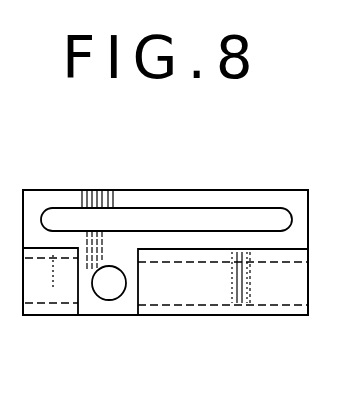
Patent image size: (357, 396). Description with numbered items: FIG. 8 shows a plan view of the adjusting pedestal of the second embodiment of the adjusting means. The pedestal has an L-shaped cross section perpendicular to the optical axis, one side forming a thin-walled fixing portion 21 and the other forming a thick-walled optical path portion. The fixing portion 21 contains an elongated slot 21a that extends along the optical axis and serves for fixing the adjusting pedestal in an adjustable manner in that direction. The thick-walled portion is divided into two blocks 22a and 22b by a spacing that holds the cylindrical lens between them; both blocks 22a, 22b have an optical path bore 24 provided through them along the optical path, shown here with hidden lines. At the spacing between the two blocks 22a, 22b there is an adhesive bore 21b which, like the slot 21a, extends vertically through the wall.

The fixing portion 21 is at (258, 200).
The slot 21a is at (182, 208).
The adhesive bore 21b is at (107, 294).
The block 22a is at (45, 320).
The block 22b is at (195, 320).
The optical path bore 24 is at (267, 318).